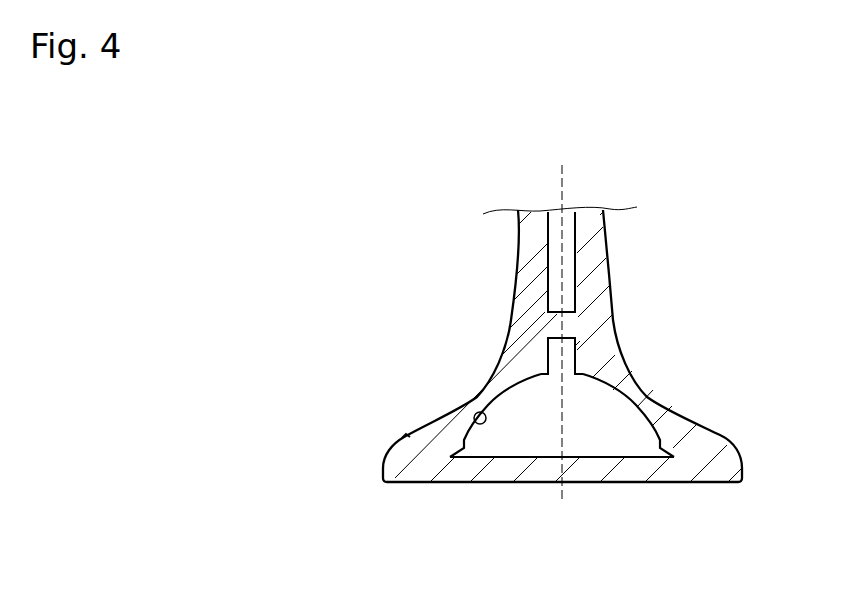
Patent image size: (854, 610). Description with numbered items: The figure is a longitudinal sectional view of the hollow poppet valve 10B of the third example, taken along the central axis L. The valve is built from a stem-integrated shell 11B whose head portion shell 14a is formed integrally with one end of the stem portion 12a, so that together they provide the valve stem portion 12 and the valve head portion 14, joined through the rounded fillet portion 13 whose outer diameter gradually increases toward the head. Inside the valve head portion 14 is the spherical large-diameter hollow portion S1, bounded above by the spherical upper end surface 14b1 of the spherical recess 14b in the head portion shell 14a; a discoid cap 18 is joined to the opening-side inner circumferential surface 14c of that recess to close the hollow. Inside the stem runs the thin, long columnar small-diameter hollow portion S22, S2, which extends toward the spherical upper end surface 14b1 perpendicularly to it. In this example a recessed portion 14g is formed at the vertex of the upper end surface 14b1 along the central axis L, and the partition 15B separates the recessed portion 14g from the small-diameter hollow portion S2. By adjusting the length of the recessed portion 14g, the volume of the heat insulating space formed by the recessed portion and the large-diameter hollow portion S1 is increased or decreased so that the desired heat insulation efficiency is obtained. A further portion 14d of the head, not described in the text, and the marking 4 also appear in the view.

The hollow poppet valve 10B is at (464, 172).
The stem portion 12a is at (432, 284).
The valve stem portion 12 is at (518, 239).
The inner space S22 is at (628, 262).
The small-diameter hollow portion S2 is at (571, 262).
The central axis L is at (566, 183).
The partition 15B is at (556, 323).
The recessed portion 14g is at (577, 340).
The large-diameter hollow portion S1 is at (622, 418).
The stem-integrated shell 11B is at (254, 243).
The fillet portion 13 is at (480, 384).
The spherical recess 14b is at (422, 479).
The spherical upper end surface 14b1 is at (475, 410).
The projection 14d is at (434, 422).
The valve head portion 14 is at (499, 451).
The head portion shell 14a is at (499, 451).
The discoid cap 18 is at (408, 486).
The opening-side inner circumferential surface 14c is at (452, 462).
The seat 4 is at (732, 546).